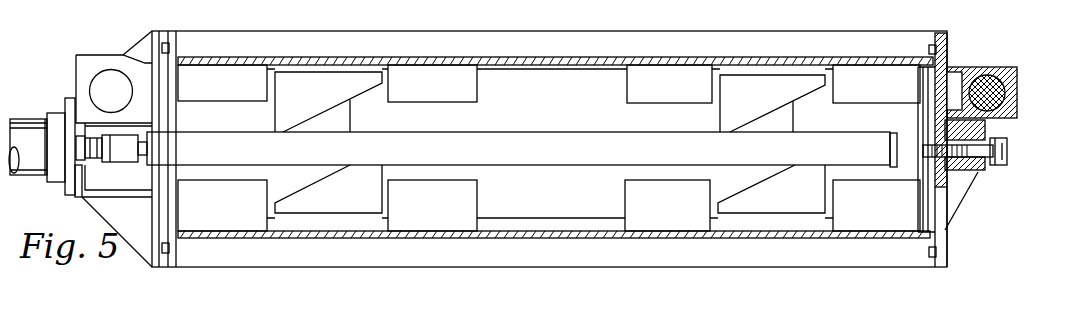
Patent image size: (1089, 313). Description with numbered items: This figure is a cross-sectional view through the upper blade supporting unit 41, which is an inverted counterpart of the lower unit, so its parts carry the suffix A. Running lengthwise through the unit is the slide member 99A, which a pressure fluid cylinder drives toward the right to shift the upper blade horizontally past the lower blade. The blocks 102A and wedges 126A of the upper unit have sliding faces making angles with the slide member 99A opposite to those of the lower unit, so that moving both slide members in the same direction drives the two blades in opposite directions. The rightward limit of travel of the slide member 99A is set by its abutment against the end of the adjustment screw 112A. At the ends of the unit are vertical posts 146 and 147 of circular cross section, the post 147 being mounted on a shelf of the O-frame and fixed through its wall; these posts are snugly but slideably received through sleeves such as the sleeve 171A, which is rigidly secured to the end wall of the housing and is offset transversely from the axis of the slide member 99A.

The upper blade supporting unit 41 is at (897, 27).
The vertical post 146 is at (108, 75).
The sleeve 171A is at (82, 72).
The vertical post 147 is at (998, 78).
The adjustment screw 112A is at (1008, 151).
The slide member 99A is at (583, 147).
The block 102A is at (341, 118).
The wedge 126A is at (549, 198).